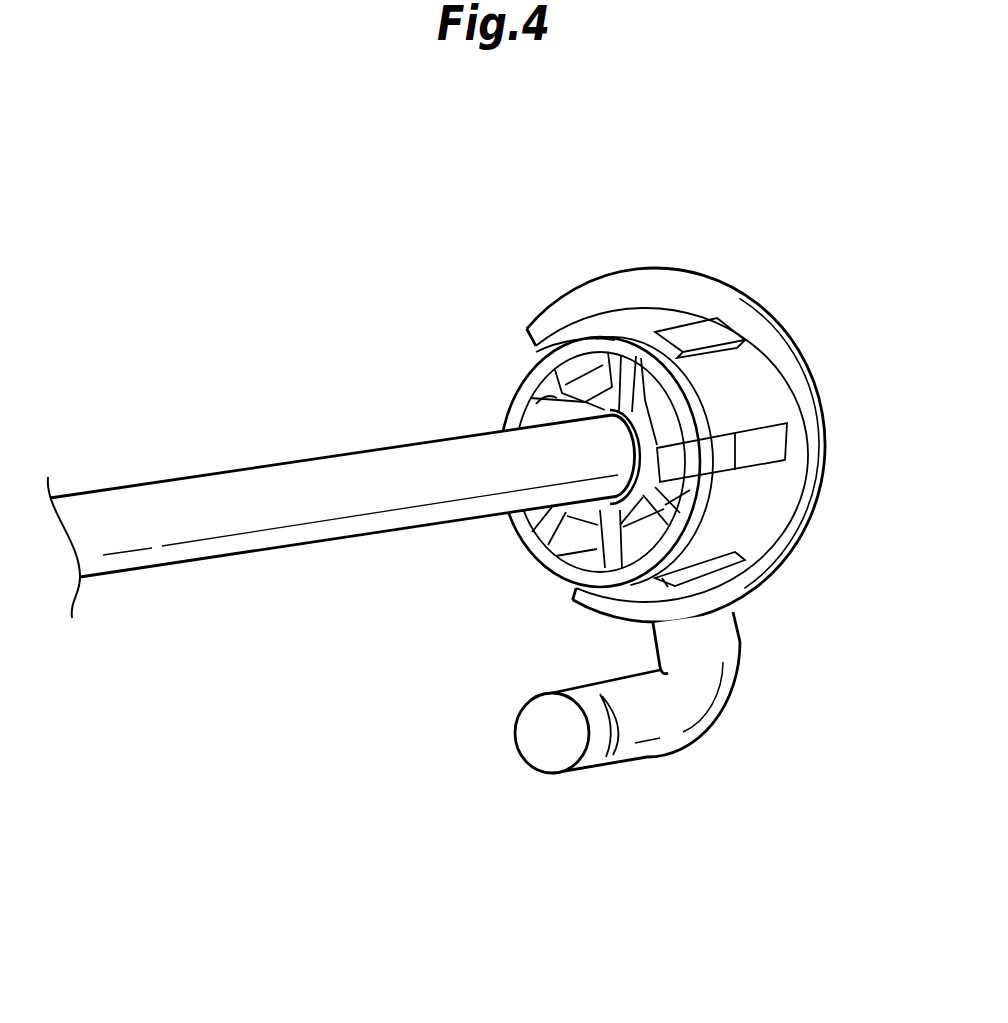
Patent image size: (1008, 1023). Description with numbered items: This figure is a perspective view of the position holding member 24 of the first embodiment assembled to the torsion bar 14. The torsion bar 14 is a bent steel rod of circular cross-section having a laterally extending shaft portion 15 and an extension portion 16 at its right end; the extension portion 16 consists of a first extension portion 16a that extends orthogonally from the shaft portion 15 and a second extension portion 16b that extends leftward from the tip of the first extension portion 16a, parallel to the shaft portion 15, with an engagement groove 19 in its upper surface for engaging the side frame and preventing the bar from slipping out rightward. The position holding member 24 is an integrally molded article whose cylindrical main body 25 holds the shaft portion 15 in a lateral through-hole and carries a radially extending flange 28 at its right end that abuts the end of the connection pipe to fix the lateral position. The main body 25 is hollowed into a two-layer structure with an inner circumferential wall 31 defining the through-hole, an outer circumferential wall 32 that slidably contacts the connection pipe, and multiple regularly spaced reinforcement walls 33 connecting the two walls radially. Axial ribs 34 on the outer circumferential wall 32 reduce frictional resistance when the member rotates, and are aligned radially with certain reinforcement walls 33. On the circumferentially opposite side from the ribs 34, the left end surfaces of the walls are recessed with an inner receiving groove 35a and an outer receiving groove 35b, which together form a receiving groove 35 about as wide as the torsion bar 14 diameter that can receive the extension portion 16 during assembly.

The torsion bar 14 is at (344, 524).
The shaft portion 15 is at (196, 548).
The extension portion 16 is at (683, 745).
The first extension portion 16a is at (738, 630).
The second extension portion 16b is at (641, 748).
The engagement groove 19 is at (600, 747).
The position holding member 24 is at (680, 402).
The main body 25 is at (610, 415).
The flange 28 is at (730, 307).
The inner circumferential wall 31 is at (643, 423).
The outer circumferential wall 32 is at (697, 502).
The reinforcement walls 33 is at (637, 372).
The ribs 34 is at (725, 335).
The receiving groove 35 is at (480, 370).
The inner receiving groove 35a is at (570, 415).
The outer receiving groove 35b is at (547, 360).